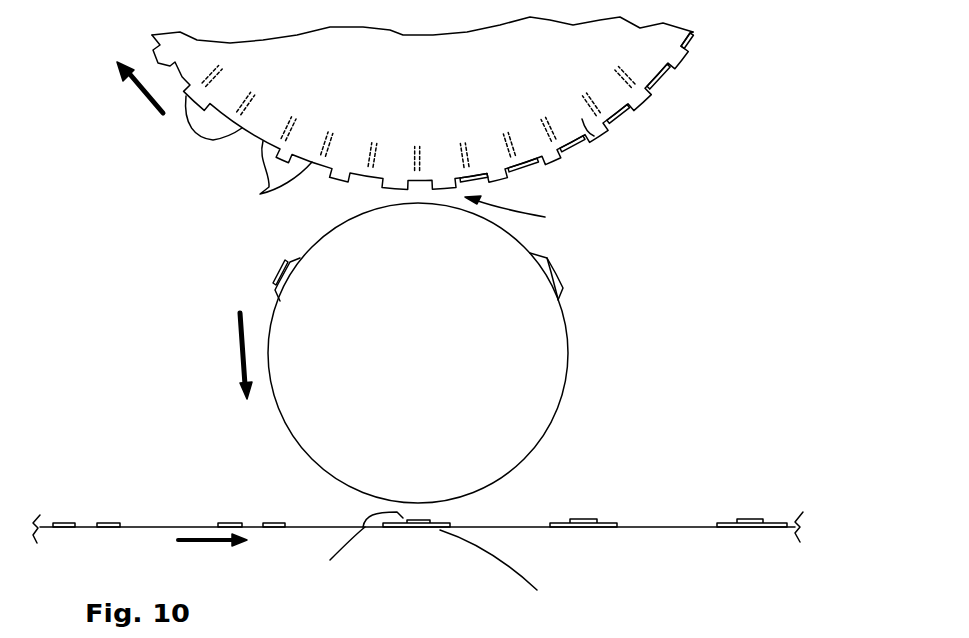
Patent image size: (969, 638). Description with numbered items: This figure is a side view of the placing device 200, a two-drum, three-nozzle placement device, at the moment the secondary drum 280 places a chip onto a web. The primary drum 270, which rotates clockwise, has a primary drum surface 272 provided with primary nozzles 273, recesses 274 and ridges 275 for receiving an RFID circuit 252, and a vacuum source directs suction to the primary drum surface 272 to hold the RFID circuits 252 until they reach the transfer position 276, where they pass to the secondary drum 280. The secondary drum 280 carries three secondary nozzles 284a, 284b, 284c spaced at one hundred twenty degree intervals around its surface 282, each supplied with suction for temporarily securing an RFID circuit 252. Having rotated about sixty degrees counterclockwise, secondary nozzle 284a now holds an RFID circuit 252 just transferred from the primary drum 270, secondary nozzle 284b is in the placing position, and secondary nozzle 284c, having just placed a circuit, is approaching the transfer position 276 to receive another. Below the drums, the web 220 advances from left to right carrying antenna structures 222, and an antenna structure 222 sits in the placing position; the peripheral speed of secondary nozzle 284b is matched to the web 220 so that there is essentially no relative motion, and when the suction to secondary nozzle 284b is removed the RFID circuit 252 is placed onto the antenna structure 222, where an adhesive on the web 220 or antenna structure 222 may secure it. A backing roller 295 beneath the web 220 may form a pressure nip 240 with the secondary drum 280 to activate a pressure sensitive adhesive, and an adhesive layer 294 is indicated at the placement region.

The placing device 200 is at (712, 106).
The web 220 is at (83, 530).
The antenna structure 222 is at (110, 524).
The nip 240 is at (337, 511).
The RFID circuit 252 is at (521, 166).
The primary drum 270 is at (478, 90).
The primary drum surface 272 is at (596, 133).
The primary nozzle 273 is at (278, 125).
The recess 274 is at (260, 194).
The ridge 275 is at (213, 140).
The transfer position 276 is at (524, 212).
The secondary drum 280 is at (438, 364).
The secondary drum surface 282 is at (567, 343).
The secondary nozzle 284a is at (296, 258).
The secondary nozzle 284b is at (366, 528).
The secondary nozzle 284c is at (555, 273).
The adhesive layer 294 is at (400, 527).
The backing roller 295 is at (503, 573).